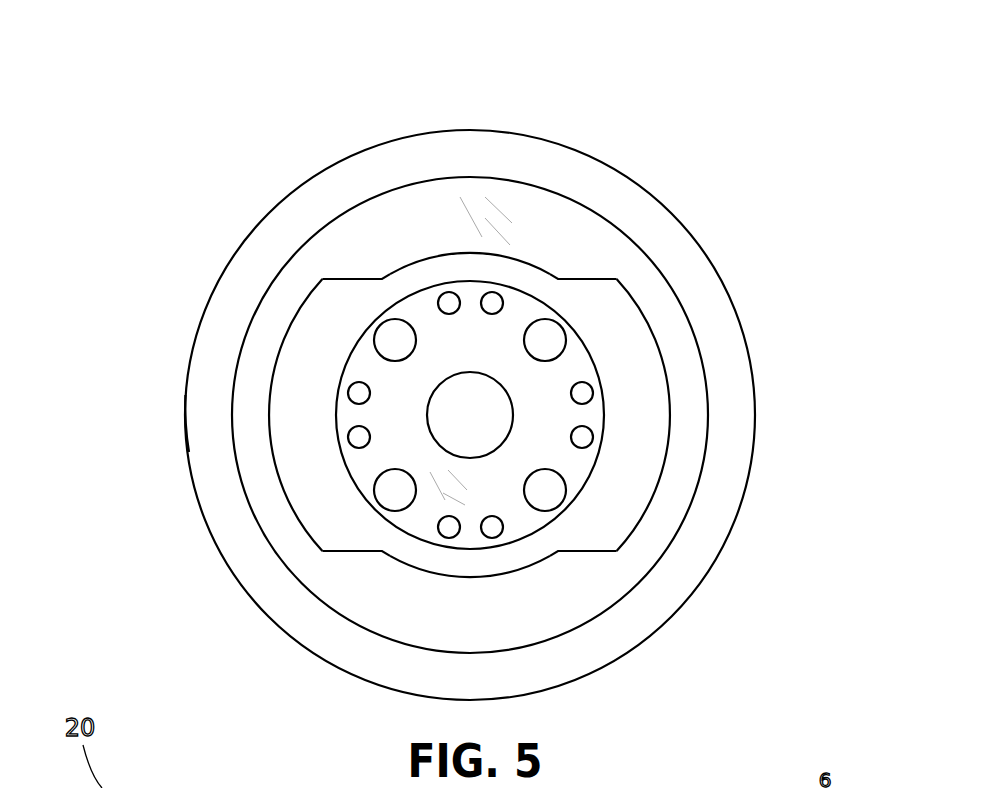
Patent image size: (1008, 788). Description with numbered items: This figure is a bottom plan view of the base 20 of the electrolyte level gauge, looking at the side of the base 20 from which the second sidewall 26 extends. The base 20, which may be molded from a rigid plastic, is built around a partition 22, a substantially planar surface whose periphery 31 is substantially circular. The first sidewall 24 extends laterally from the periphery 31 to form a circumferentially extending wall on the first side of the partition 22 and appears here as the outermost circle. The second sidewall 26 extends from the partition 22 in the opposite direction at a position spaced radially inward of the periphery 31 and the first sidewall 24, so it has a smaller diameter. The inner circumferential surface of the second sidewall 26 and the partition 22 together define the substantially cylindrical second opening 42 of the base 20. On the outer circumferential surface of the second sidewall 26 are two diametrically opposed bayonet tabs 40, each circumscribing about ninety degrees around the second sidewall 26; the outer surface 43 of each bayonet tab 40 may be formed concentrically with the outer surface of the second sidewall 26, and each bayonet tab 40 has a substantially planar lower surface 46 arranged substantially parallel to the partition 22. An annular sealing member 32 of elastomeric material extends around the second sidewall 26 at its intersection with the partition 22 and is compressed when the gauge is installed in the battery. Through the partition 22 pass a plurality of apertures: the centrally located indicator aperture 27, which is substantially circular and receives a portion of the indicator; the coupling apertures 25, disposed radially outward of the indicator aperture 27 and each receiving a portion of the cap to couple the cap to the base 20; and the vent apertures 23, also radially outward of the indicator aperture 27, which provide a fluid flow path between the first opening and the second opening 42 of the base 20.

The base 20 is at (235, 245).
The partition 22 is at (382, 427).
The vent apertures 23 is at (447, 533).
The first sidewall 24 is at (323, 170).
The coupling apertures 25 is at (405, 332).
The second sidewall 26 is at (433, 253).
The indicator aperture 27 is at (480, 397).
The periphery 31 is at (213, 538).
The annular sealing member 32 is at (392, 598).
The bayonet tabs 40 is at (302, 410).
The second opening 42 is at (505, 495).
The outer surface 43 is at (283, 352).
The lower surface 46 is at (307, 501).